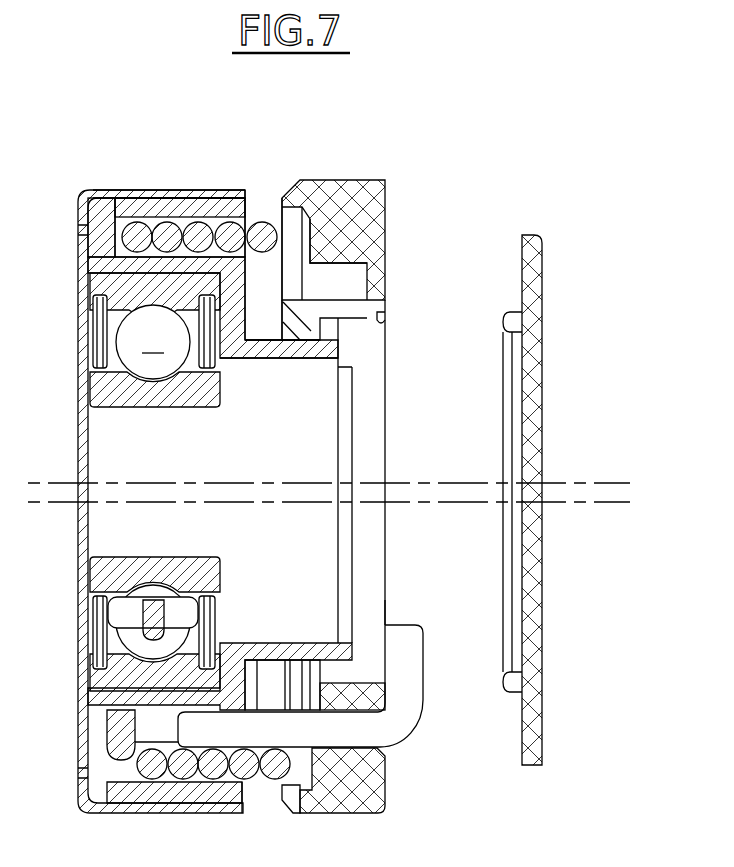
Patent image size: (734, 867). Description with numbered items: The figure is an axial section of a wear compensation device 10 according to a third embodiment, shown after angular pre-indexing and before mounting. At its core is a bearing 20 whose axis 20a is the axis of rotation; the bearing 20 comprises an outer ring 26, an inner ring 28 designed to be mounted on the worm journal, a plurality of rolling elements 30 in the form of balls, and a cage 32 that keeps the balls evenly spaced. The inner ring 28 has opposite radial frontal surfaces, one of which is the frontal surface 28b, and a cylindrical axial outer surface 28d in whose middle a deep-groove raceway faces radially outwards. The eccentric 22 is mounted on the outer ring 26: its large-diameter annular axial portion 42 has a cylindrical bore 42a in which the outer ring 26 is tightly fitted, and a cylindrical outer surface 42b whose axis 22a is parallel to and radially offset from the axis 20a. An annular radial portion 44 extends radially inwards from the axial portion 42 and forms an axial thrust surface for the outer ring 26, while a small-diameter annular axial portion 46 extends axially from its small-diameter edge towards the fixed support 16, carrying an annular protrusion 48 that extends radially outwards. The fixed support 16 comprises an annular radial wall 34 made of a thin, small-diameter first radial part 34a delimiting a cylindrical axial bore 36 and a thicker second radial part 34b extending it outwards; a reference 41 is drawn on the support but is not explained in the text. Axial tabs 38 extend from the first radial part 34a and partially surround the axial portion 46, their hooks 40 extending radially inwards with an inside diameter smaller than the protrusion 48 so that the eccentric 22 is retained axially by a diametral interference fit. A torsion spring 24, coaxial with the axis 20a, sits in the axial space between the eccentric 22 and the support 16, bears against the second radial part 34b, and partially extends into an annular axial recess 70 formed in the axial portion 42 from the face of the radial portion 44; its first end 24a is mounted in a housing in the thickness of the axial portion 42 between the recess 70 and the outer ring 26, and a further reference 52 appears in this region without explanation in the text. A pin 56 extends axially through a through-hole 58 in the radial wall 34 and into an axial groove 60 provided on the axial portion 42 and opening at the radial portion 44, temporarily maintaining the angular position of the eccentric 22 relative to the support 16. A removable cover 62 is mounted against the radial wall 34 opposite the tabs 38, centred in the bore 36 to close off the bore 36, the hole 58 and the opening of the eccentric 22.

The wear compensation device 10 is at (346, 142).
The fixed support 16 is at (396, 205).
The bearing 20 is at (95, 266).
The axis of rotation of the bearing 20a is at (628, 483).
The eccentric 22 is at (84, 748).
The axis of the outer surface of the eccentric 22a is at (628, 502).
The torsion spring 24 is at (244, 786).
The first end of the spring 24a is at (127, 760).
The outer ring of the bearing 26 is at (122, 680).
The inner ring of the bearing 28 is at (105, 573).
The radial frontal surface of the inner ring 28b is at (218, 388).
The cylindrical axial outer surface of the inner ring 28d is at (95, 352).
The rolling elements 30 is at (153, 342).
The cage 32 is at (120, 606).
The annular radial wall of the fixed support 34 is at (378, 777).
The first annular radial part of the radial wall 34a is at (377, 286).
The second annular radial part of the radial wall 34b is at (328, 212).
The cylindrical axial bore of the support 36 is at (380, 318).
The axial tabs 38 is at (340, 312).
The hooks 40 is at (283, 335).
The flange portion 41 is at (377, 186).
The large-diameter annular axial portion of the eccentric 42 is at (125, 207).
The cylindrical bore of the eccentric 42a is at (118, 285).
The cylindrical outer surface of the eccentric 42b is at (167, 195).
The annular radial portion of the eccentric 44 is at (237, 300).
The small-diameter annular axial portion of the eccentric 46 is at (280, 350).
The annular protrusion of the eccentric 48 is at (327, 328).
The lower race ring 52 is at (205, 808).
The pin 56 is at (297, 737).
The through-hole 58 is at (355, 740).
The axial groove 60 is at (153, 725).
The removable cover 62 is at (550, 352).
The annular axial recess 70 is at (205, 235).